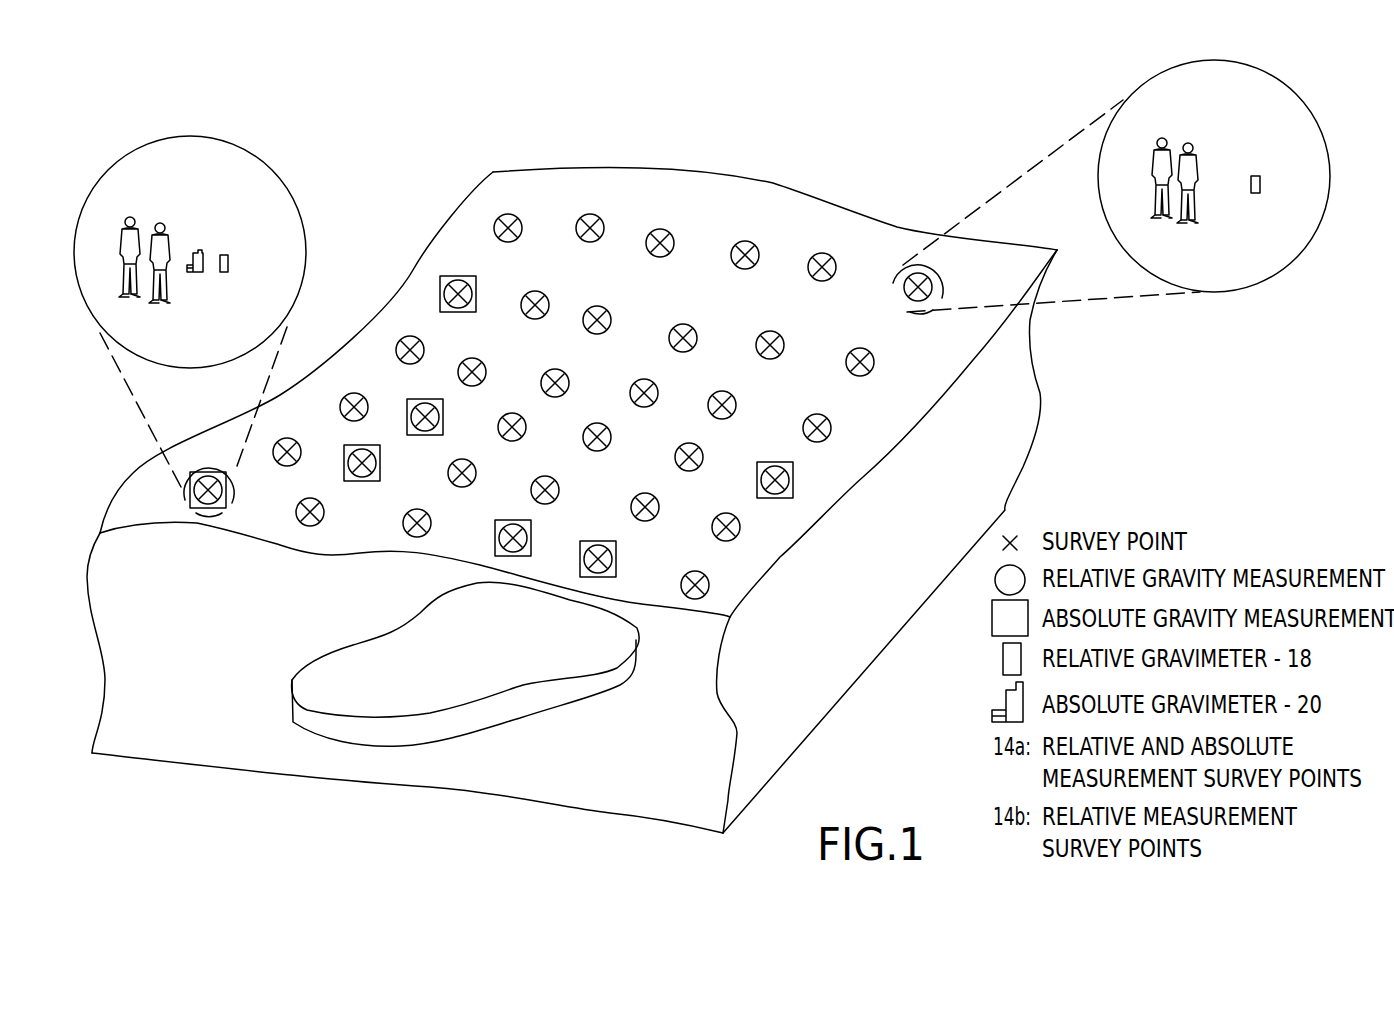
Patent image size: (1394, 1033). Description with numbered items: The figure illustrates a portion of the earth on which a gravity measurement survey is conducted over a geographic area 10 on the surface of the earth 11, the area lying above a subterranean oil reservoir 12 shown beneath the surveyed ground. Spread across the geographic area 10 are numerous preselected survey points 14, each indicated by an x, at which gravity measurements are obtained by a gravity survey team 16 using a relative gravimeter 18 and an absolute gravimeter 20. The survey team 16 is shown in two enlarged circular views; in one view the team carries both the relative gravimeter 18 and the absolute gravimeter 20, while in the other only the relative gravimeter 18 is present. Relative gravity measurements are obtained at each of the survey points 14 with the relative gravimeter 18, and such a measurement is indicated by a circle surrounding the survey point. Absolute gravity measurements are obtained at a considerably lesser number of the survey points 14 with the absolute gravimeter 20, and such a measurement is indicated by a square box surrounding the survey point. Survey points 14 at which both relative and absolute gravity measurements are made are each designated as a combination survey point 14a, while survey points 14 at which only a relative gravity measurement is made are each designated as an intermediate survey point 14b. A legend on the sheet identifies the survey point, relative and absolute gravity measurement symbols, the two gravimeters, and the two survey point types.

The geographic area 10 is at (412, 153).
The surface of the earth 11 is at (903, 554).
The subterranean oil reservoir 12 is at (537, 705).
The survey points 14 is at (521, 224).
The combination survey point 14a is at (476, 283).
The intermediate survey point 14b is at (737, 266).
The gravity survey team 16 is at (148, 200).
The relative gravimeter 18 is at (232, 262).
The absolute gravimeter 20 is at (203, 252).